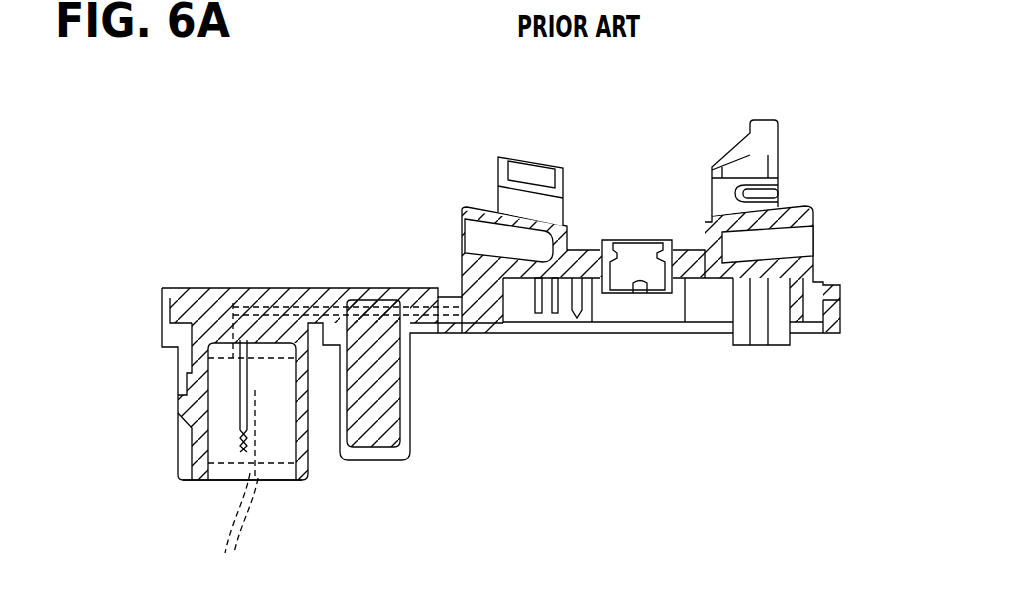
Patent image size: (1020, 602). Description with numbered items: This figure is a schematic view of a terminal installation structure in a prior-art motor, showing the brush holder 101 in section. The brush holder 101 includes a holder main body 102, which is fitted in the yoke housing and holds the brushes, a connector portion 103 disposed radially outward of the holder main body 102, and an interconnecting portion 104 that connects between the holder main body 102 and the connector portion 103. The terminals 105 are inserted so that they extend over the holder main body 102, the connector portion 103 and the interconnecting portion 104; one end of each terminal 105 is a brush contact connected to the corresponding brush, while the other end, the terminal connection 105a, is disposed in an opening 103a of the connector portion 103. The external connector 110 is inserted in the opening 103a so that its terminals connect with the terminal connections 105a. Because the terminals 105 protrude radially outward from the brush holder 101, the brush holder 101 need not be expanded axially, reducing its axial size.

The brush holder 101 is at (290, 200).
The holder main body 102 is at (510, 113).
The connector portion 103 is at (272, 263).
The interconnecting portion 104 is at (430, 263).
The terminal 105 is at (238, 361).
The terminal connection 105a is at (244, 375).
The opening 103a is at (214, 470).
The external connector 110 is at (287, 443).